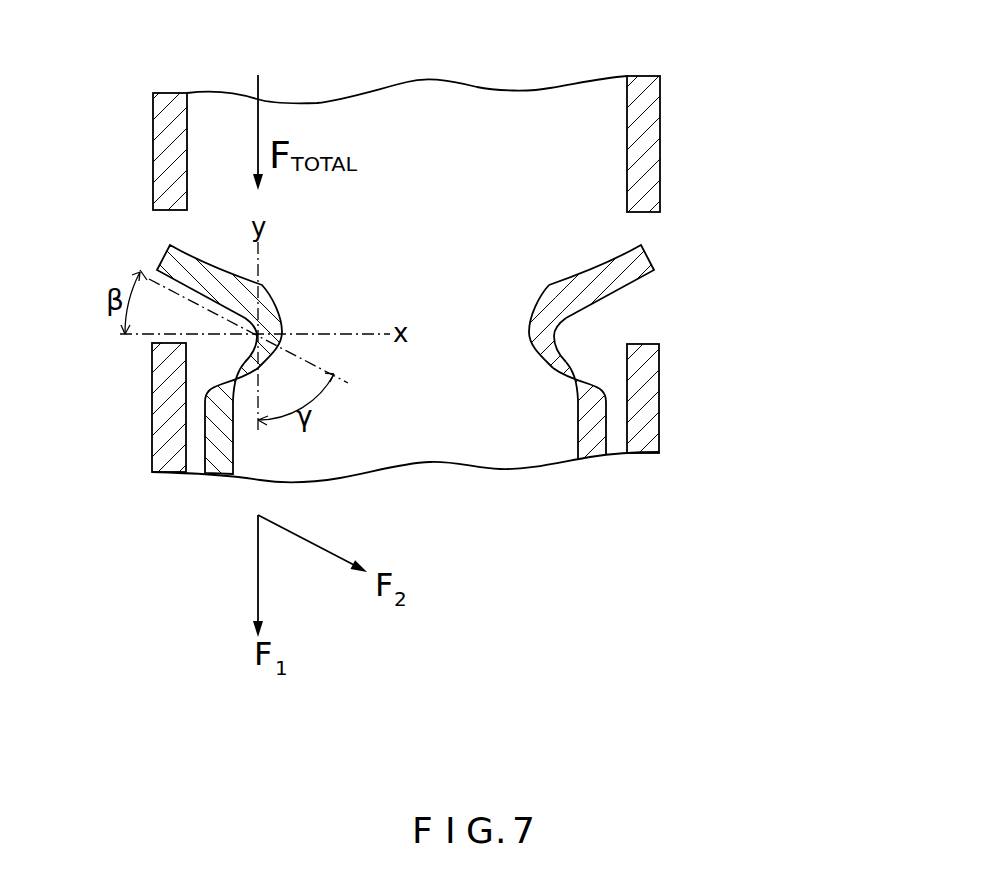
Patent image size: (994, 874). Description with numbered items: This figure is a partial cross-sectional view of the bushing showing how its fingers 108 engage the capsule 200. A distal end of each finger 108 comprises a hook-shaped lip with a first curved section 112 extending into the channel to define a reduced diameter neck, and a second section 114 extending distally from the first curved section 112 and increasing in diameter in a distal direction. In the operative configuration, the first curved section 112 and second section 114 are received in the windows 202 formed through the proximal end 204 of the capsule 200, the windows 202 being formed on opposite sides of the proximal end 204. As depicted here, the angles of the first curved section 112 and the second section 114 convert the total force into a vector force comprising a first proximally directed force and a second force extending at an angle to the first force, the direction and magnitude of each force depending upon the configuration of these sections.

The capsule 200 is at (640, 117).
The window 202 is at (640, 303).
The proximal end 204 is at (647, 433).
The finger 108 is at (592, 448).
The first curved section 112 is at (537, 348).
The second section 114 is at (630, 265).